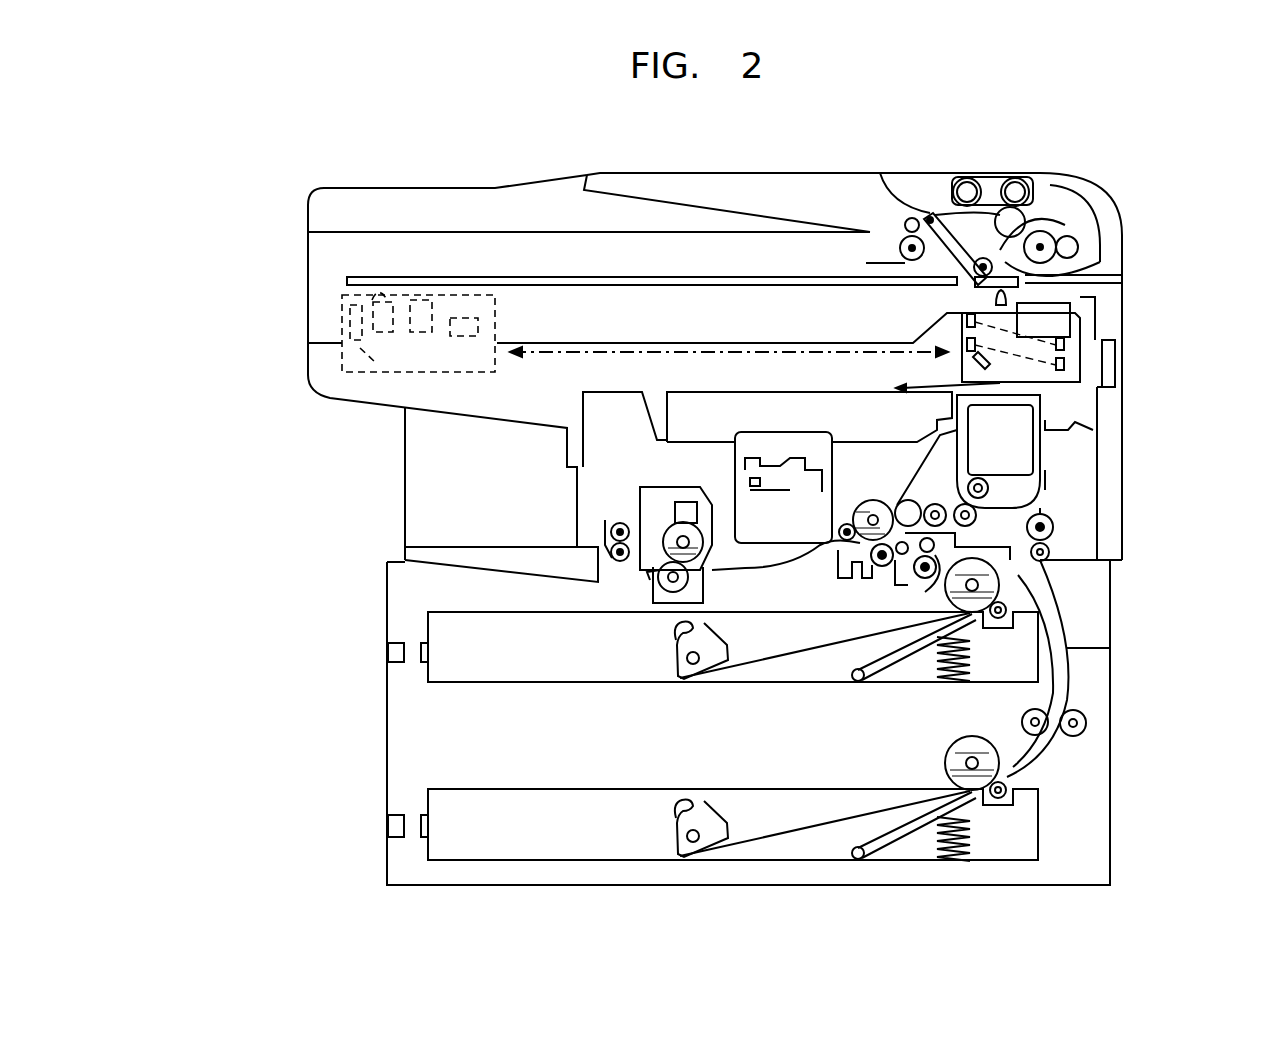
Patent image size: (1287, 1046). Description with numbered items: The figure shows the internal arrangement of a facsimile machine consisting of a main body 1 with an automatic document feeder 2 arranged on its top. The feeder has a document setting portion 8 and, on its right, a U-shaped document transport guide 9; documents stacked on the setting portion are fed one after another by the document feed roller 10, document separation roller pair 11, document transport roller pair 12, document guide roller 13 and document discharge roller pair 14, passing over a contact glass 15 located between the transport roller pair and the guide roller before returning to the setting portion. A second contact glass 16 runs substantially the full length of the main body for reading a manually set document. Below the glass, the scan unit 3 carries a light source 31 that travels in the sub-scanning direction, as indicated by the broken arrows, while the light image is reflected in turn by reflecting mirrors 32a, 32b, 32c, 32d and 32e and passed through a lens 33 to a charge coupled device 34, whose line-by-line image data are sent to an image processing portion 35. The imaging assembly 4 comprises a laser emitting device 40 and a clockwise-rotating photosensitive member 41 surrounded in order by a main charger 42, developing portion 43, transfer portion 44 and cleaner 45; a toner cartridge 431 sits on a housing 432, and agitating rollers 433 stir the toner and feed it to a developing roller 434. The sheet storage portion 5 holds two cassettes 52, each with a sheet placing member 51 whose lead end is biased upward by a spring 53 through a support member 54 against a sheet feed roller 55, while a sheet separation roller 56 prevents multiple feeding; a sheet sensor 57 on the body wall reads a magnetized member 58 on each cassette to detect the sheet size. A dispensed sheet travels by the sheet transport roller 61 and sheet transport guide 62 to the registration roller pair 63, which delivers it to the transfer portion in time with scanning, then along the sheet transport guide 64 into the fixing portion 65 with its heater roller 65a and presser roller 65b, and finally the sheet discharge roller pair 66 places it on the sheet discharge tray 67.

The main body 1 is at (302, 492).
The automatic document feeder 2 is at (288, 176).
The scan unit 3 is at (1140, 365).
The imaging assembly 4 is at (1136, 493).
The sheet storage portion 5 is at (362, 720).
The document setting portion 8 is at (680, 207).
The document transport guide 9 is at (1047, 233).
The document feed roller 10 is at (963, 178).
The document separation roller pair 11 is at (1014, 207).
The document transport roller pair 12 is at (1053, 262).
The document guide roller 13 is at (926, 218).
The document discharge roller pair 14 is at (901, 243).
The contact glass 15 is at (1107, 282).
The contact glass 16 is at (462, 275).
The light source 31 is at (993, 298).
The reflecting mirror 32a is at (962, 362).
The reflecting mirror 32b is at (1064, 337).
The reflecting mirror 32c is at (962, 325).
The reflecting mirror 32d is at (1073, 347).
The reflecting mirror 32e is at (965, 320).
The lens 33 is at (1096, 300).
The charge coupled device (CCD) 34 is at (1055, 317).
The image processing portion 35 is at (1112, 346).
The laser emitting device 40 is at (705, 392).
The photosensitive member 41 is at (845, 510).
The main charger 42 is at (868, 486).
The developing portion 43 is at (1056, 467).
The transfer portion 44 is at (875, 567).
The cleaner 45 is at (845, 545).
The sheet placing member 51 is at (795, 830).
The cassette 52 is at (480, 790).
The spring 53 is at (963, 672).
The support member 54 is at (870, 665).
The sheet feed roller 55 is at (1002, 572).
The sheet separation roller 56 is at (998, 620).
The sheet sensor 57 is at (388, 652).
The magnetized member 58 is at (421, 648).
The sheet transport roller 61 is at (1049, 736).
The sheet transport guide 62 is at (1062, 605).
The registration roller pair 63 is at (920, 576).
The sheet transport guide 64 is at (706, 583).
The fixing portion 65 is at (637, 483).
The heater roller 65a is at (668, 520).
The presser roller 65b is at (660, 582).
The sheet discharge roller pair 66 is at (617, 524).
The sheet discharge tray 67 is at (457, 547).
The toner cartridge 431 is at (1094, 431).
The housing 432 is at (1046, 492).
The agitating rollers 433 is at (1050, 554).
The developing roller 434 is at (930, 500).